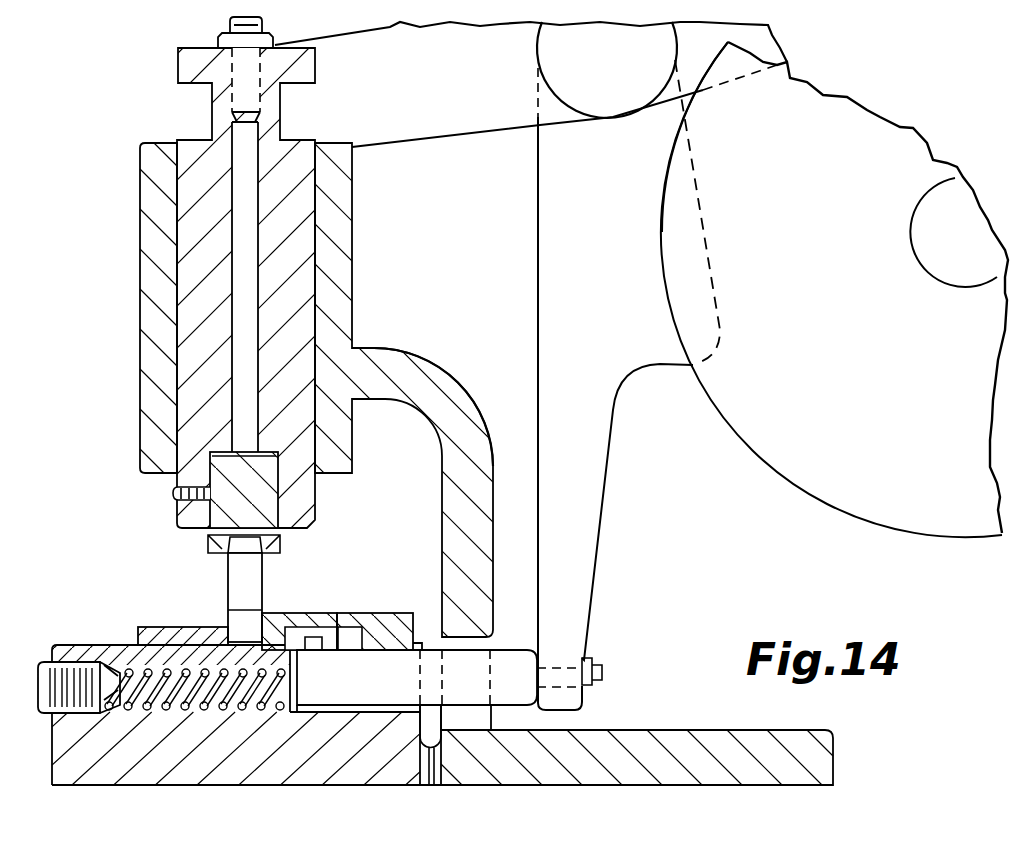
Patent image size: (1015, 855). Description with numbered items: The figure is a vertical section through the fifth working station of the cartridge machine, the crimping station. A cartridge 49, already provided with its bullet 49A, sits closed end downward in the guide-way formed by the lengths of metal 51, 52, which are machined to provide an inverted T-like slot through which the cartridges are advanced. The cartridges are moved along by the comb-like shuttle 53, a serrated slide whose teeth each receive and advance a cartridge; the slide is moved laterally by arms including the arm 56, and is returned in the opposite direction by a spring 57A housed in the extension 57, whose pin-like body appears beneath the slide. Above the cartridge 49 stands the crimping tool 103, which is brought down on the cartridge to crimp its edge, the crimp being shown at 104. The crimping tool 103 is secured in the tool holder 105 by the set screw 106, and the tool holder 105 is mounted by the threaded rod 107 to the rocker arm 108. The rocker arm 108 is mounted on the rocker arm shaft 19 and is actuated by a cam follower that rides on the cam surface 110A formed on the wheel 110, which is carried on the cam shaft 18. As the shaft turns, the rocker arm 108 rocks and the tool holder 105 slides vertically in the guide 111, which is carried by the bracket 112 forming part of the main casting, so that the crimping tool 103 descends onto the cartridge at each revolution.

The cam shaft 18 is at (942, 207).
The rocker arm shaft 19 is at (541, 74).
The cartridge 49 is at (250, 593).
The bullet 49A is at (228, 553).
The length of metal 51 is at (165, 628).
The length of metal 52 is at (388, 624).
The comb-like shuttle 53 is at (323, 632).
The arm 56 is at (585, 548).
The extension 57 is at (507, 658).
The spring 57A is at (140, 680).
The crimping tool 103 is at (264, 493).
The crimp 104 is at (279, 546).
The tool holder 105 is at (292, 280).
The set screw 106 is at (173, 494).
The threaded rod 107 is at (245, 205).
The rocker arm 108 is at (396, 116).
The wheel 110 is at (846, 101).
The cam surface 110A is at (663, 233).
The guide 111 is at (331, 425).
The bracket 112 is at (404, 362).